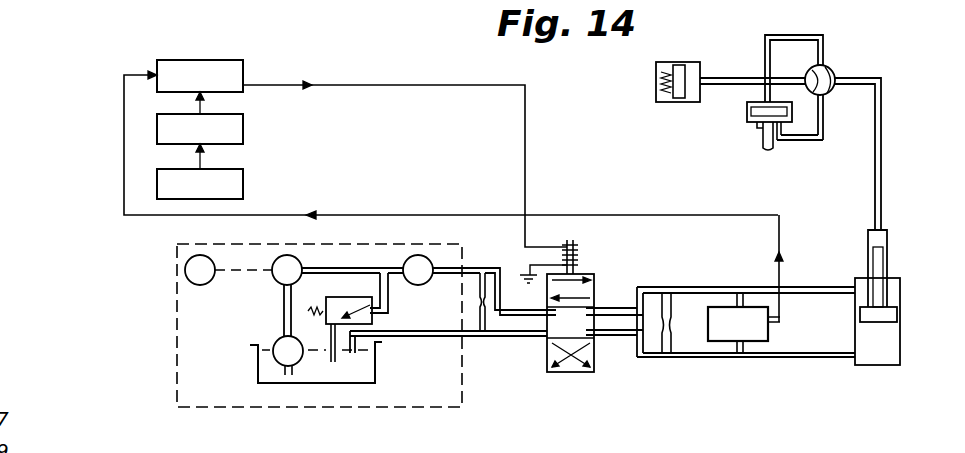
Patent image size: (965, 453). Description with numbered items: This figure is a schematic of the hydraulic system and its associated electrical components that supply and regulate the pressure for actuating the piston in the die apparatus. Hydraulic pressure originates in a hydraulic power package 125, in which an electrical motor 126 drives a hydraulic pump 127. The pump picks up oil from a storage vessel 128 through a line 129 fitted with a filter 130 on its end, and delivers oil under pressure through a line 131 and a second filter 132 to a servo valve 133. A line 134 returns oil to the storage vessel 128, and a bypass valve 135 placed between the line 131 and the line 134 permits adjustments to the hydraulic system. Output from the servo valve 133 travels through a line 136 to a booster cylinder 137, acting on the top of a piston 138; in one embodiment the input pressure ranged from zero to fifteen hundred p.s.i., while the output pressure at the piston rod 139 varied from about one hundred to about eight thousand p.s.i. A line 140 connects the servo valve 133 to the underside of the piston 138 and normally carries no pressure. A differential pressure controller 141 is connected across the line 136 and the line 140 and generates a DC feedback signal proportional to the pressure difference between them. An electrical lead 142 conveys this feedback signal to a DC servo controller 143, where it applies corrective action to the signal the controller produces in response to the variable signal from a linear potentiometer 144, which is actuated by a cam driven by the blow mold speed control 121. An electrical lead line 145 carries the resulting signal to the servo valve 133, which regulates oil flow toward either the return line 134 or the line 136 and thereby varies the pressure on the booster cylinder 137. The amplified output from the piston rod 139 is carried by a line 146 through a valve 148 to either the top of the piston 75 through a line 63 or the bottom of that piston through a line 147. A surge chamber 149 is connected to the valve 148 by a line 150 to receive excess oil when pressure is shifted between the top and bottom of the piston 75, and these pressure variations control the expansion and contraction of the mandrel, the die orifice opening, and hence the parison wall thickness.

The line 63 is at (765, 58).
The piston 75 is at (747, 113).
The blow mold speed control 121 is at (247, 183).
The hydraulic power package 125 is at (172, 383).
The electrical motor 126 is at (206, 285).
The hydraulic pump 127 is at (283, 254).
The storage vessel 128 is at (258, 368).
The line 129 is at (283, 312).
The filter 130 is at (275, 343).
The line 131 is at (362, 268).
The filter 132 is at (423, 254).
The servo valve 133 is at (595, 354).
The line 134 is at (441, 338).
The bypass valve 135 is at (486, 298).
The line 136 is at (768, 358).
The booster cylinder 137 is at (900, 350).
The piston 138 is at (897, 315).
The piston rod 139 is at (881, 263).
The line 140 is at (791, 287).
The differential pressure controller 141 is at (770, 330).
The electrical lead 142 is at (618, 213).
The DC servo controller 143 is at (245, 70).
The linear potentiometer 144 is at (247, 130).
The electrical lead line 145 is at (528, 110).
The line 146 is at (883, 108).
The line 147 is at (805, 142).
The valve 148 is at (834, 68).
The surge chamber 149 is at (672, 103).
The line 150 is at (708, 72).